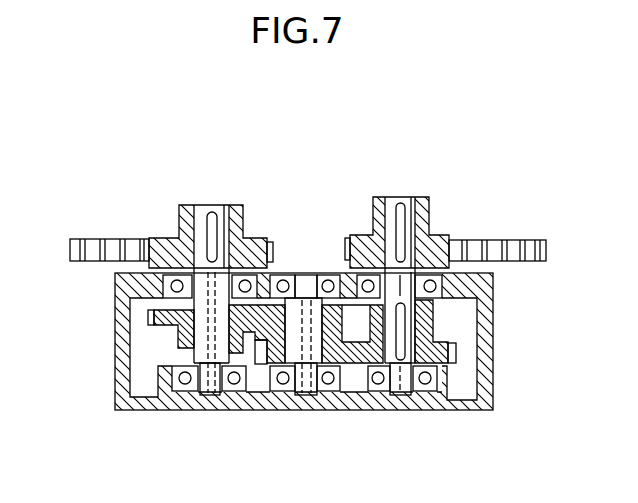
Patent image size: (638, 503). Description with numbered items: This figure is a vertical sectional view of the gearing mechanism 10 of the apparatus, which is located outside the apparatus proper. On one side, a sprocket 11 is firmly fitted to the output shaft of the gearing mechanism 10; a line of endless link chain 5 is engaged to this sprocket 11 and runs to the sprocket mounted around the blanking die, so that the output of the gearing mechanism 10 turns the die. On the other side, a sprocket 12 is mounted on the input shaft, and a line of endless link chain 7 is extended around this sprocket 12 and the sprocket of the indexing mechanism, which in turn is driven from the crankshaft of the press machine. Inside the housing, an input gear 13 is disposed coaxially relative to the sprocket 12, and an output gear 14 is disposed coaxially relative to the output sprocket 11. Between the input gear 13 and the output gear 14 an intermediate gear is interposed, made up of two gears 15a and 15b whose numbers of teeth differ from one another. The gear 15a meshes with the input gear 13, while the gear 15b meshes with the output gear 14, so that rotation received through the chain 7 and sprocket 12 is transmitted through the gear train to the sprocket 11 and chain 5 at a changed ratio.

The gearing mechanism 10 is at (430, 156).
The endless link chain 5 is at (130, 246).
The endless link chain 7 is at (505, 241).
The sprocket 11 is at (218, 206).
The sprocket 12 is at (405, 200).
The input gear 13 is at (456, 352).
The output gear 14 is at (150, 316).
The gear 15a is at (261, 364).
The gear 15b is at (331, 302).